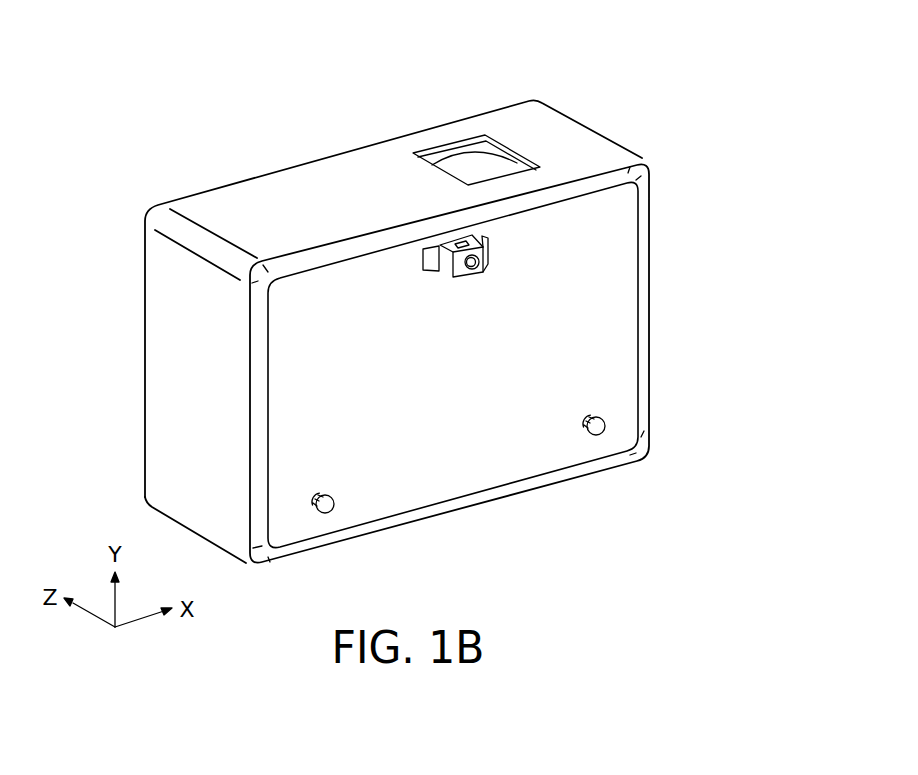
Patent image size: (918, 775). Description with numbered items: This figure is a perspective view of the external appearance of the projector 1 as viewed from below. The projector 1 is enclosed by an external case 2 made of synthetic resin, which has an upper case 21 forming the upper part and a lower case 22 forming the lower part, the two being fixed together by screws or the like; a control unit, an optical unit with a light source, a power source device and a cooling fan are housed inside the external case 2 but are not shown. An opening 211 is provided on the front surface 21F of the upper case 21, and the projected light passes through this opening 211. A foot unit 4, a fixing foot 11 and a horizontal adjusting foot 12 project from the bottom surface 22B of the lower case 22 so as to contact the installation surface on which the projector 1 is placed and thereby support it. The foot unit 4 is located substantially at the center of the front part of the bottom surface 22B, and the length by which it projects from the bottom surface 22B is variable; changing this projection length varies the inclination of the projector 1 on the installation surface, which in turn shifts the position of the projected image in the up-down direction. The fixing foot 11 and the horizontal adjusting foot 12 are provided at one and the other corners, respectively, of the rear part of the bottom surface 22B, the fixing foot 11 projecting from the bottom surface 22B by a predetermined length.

The projector 1 is at (580, 75).
The external case 2 is at (718, 118).
The upper case 21 is at (602, 150).
The front surface 21F is at (348, 166).
The opening 211 is at (460, 140).
The lower case 22 is at (622, 216).
The bottom surface 22B is at (622, 340).
The foot unit 4 is at (447, 268).
The fixing foot 11 is at (602, 431).
The horizontal adjusting foot 12 is at (331, 508).